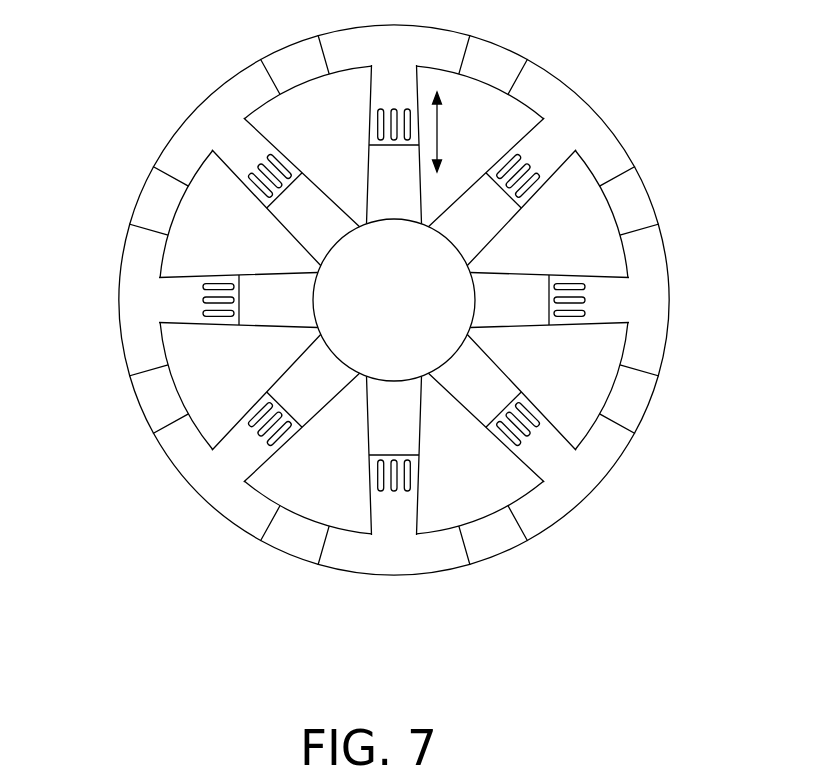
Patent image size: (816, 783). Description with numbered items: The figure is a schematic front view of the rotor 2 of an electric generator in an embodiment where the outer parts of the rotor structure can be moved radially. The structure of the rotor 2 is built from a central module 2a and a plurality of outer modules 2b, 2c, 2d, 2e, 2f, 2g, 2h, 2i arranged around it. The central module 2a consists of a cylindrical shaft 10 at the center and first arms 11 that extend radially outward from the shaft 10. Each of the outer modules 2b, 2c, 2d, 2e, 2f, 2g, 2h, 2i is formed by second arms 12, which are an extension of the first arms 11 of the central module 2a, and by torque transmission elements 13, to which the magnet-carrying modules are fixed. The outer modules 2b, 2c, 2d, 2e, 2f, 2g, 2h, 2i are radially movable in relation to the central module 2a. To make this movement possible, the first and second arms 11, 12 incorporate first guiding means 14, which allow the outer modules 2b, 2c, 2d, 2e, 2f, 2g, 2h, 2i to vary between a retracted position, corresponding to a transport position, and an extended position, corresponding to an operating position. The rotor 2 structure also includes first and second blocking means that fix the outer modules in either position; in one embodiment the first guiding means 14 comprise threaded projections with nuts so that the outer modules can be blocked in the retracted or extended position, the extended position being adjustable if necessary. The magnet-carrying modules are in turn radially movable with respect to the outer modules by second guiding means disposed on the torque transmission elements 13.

The rotor 2 is at (648, 488).
The central module 2a is at (343, 423).
The outer module 2b is at (472, 31).
The outer module 2c is at (606, 94).
The outer module 2d is at (659, 215).
The outer module 2e is at (584, 505).
The outer module 2f is at (465, 579).
The outer module 2g is at (324, 569).
The outer module 2h is at (165, 132).
The outer module 2i is at (118, 238).
The cylindrical shaft 10 is at (442, 302).
The first arms 11 is at (307, 223).
The second arms 12 is at (542, 443).
The torque transmission elements 13 is at (193, 463).
The first guiding means 14 is at (302, 173).